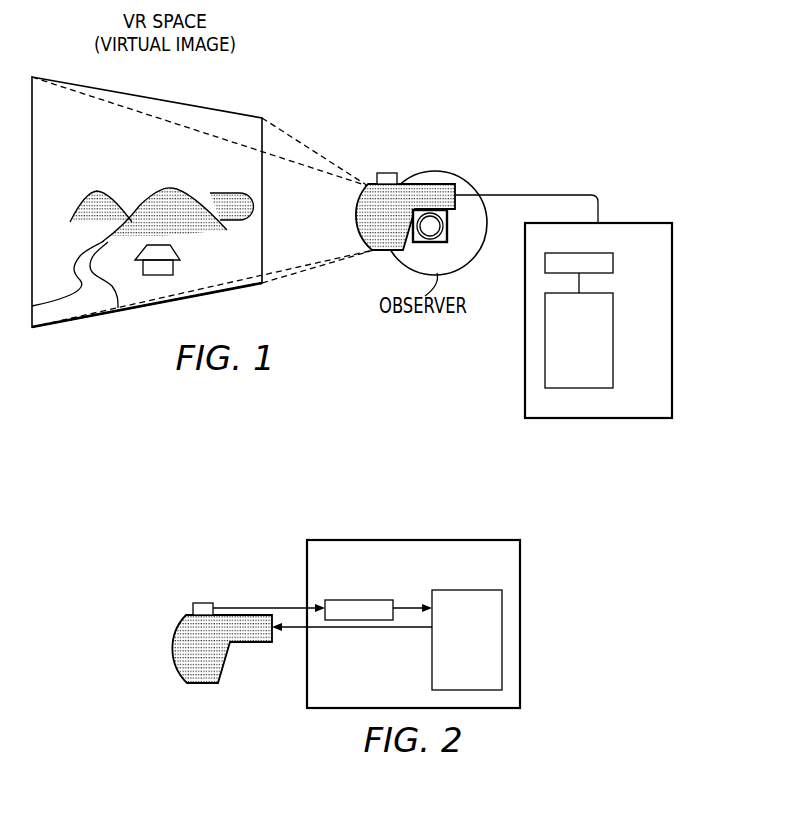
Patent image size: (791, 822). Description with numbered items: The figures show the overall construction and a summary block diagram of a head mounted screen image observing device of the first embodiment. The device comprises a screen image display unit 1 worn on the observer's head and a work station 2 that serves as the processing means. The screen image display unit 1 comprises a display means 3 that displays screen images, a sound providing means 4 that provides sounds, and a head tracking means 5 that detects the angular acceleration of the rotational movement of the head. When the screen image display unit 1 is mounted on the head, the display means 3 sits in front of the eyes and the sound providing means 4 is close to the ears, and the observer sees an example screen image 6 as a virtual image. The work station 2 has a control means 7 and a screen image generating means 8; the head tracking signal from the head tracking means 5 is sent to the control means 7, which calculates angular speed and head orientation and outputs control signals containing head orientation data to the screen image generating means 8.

In FIG. 1, the screen image display unit 1 is at (545, 140).
In FIG. 1, the work station 2 is at (520, 355).
In FIG. 2, the work station 2 is at (302, 678).
In FIG. 1, the display means 3 is at (383, 252).
In FIG. 2, the display means 3 is at (200, 685).
In FIG. 1, the sound providing means 4 is at (444, 225).
In FIG. 1, the head tracking means 5 is at (390, 172).
In FIG. 2, the head tracking means 5 is at (202, 602).
In FIG. 1, the screen image 6 is at (152, 98).
In FIG. 1, the control means 7 is at (613, 263).
In FIG. 2, the control means 7 is at (360, 598).
In FIG. 1, the screen image generating means 8 is at (613, 342).
In FIG. 2, the screen image generating means 8 is at (432, 660).